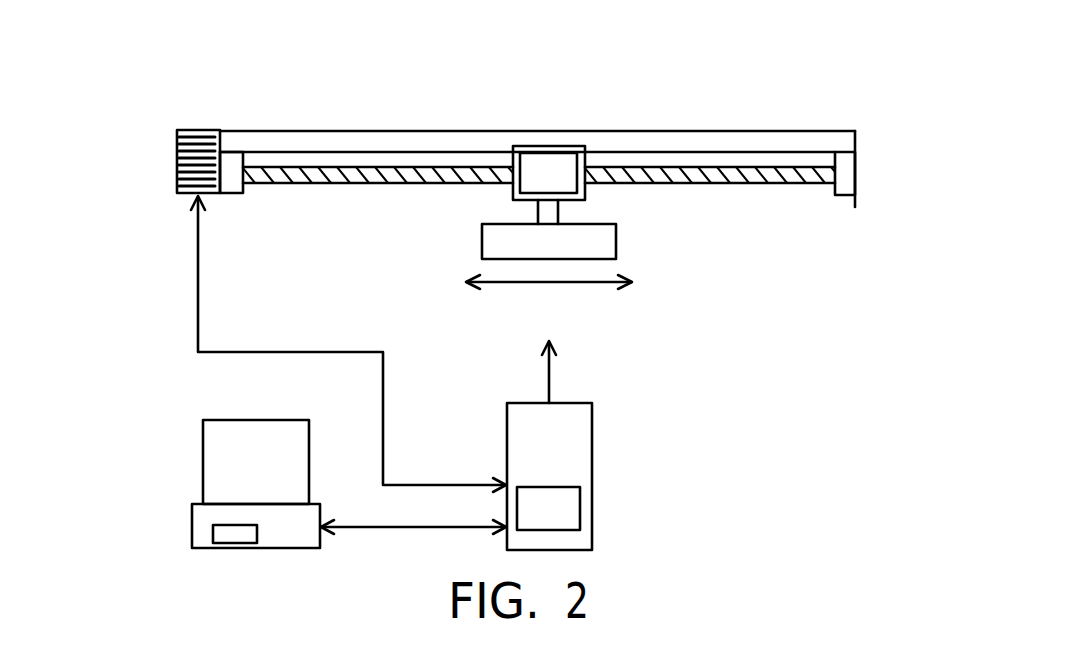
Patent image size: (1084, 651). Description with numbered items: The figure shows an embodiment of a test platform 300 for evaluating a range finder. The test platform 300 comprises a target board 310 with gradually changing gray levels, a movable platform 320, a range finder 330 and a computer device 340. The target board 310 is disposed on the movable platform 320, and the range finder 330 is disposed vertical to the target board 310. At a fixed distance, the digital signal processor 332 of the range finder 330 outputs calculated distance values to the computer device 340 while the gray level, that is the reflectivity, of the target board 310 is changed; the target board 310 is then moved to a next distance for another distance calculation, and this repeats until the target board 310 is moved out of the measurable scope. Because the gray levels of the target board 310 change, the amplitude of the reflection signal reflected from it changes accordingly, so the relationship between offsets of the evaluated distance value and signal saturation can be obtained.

The test platform 300 is at (478, 306).
The target board 310 is at (616, 241).
The movable platform 320 is at (548, 146).
The range finder 330 is at (612, 445).
The digital signal processor 332 is at (580, 508).
The computer device 340 is at (203, 462).